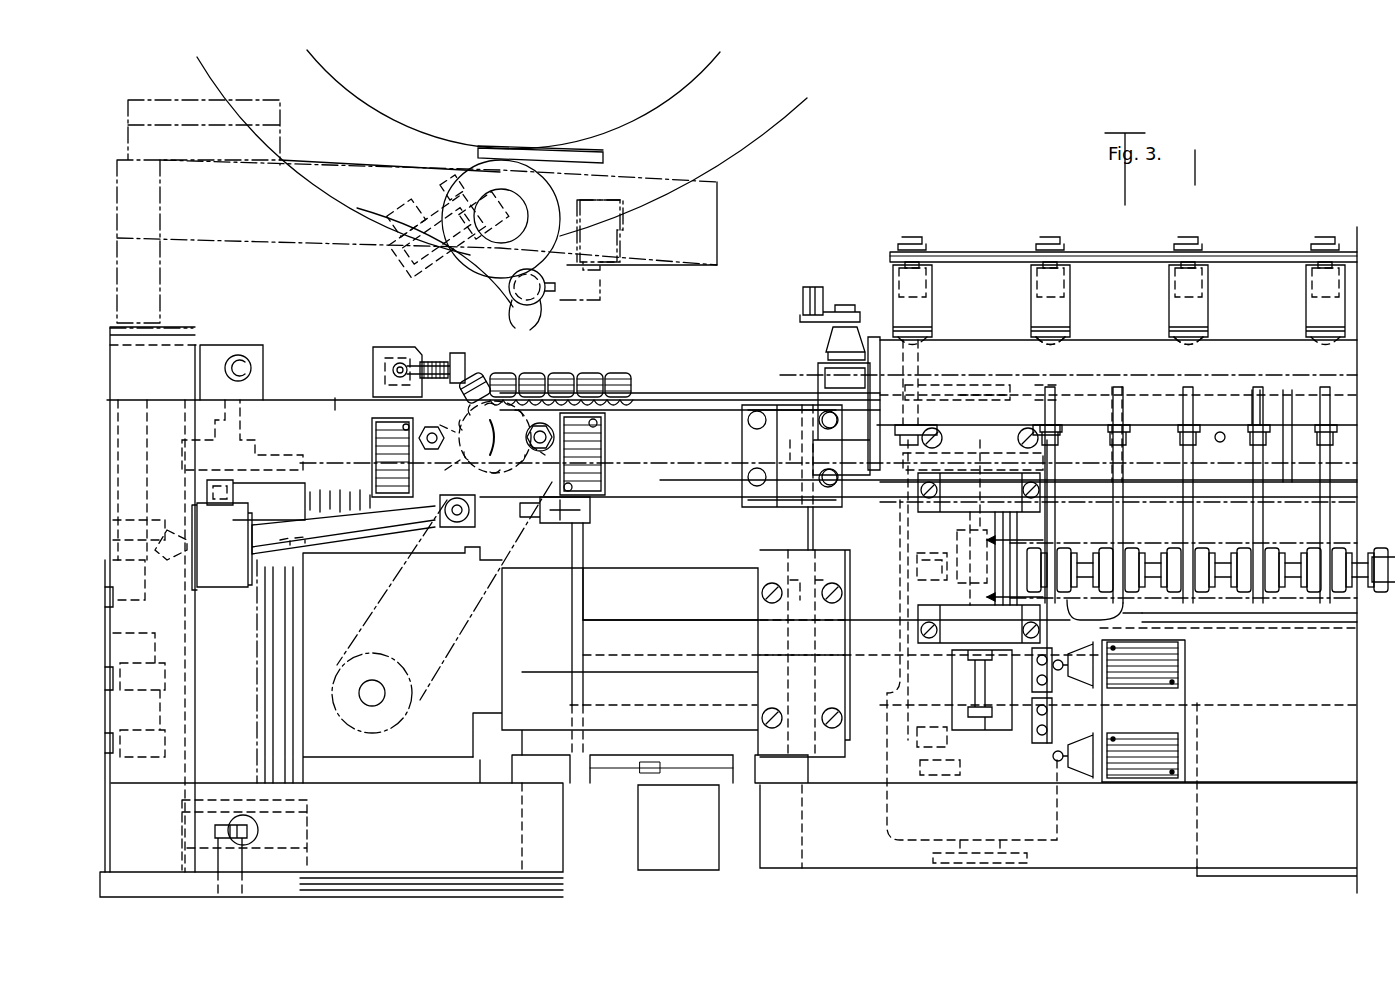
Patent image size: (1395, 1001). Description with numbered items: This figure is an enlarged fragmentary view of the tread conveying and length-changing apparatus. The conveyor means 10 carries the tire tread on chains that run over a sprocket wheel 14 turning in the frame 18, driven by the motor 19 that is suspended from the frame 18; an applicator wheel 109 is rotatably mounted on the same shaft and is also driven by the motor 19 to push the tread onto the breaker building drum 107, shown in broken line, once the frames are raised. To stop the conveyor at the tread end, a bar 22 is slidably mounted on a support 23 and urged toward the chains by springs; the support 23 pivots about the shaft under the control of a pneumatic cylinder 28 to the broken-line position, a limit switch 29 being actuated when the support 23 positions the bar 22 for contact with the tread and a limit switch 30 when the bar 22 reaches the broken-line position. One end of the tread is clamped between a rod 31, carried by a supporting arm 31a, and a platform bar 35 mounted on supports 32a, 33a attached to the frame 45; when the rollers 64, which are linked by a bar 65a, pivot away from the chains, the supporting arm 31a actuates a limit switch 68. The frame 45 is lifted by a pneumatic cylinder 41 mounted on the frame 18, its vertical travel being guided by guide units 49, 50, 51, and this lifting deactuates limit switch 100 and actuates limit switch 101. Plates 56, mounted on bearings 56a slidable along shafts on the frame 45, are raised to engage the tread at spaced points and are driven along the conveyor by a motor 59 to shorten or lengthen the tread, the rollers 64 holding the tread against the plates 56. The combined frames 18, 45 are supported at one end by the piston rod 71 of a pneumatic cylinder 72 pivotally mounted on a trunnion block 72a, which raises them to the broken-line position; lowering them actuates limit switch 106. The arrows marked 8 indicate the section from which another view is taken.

The breaker building drum 107 is at (660, 103).
The applicator wheel 109 is at (557, 197).
The bar 22 is at (438, 172).
The limit switch 30 is at (605, 440).
The support 23 is at (415, 347).
The section line 8 is at (523, 343).
The conveyor means 10 is at (628, 378).
The frame 18 is at (335, 398).
The piston rod 71 is at (267, 432).
The limit switch 29 is at (372, 432).
The sprocket wheel 14 is at (497, 463).
The limit switch 106 is at (233, 500).
The pneumatic cylinder 28 is at (328, 556).
The pneumatic cylinder 72 is at (305, 615).
The trunnion block 72a is at (305, 803).
The support 33a is at (585, 535).
The frame 45 is at (623, 620).
The motor 19 is at (673, 568).
The guide unit 49 is at (756, 507).
The guide unit 50 is at (805, 534).
The guide unit 51 is at (847, 556).
The limit switch 68 is at (828, 356).
The bar 65a is at (1120, 252).
The supporting arm 31a is at (933, 281).
The rod 31 is at (922, 345).
The platform bar 35 is at (978, 383).
The roller 64 is at (1053, 340).
The support 32a is at (980, 468).
The pneumatic cylinder 41 is at (940, 530).
The plate 56 is at (1112, 515).
The bearing 56a is at (1128, 612).
The limit switch 100 is at (1172, 668).
The limit switch 101 is at (1168, 750).
The motor 59 is at (1285, 876).